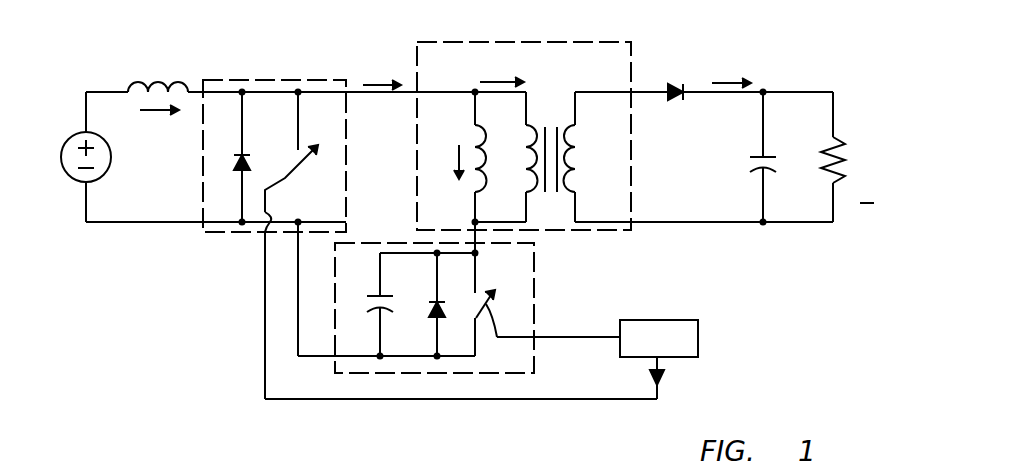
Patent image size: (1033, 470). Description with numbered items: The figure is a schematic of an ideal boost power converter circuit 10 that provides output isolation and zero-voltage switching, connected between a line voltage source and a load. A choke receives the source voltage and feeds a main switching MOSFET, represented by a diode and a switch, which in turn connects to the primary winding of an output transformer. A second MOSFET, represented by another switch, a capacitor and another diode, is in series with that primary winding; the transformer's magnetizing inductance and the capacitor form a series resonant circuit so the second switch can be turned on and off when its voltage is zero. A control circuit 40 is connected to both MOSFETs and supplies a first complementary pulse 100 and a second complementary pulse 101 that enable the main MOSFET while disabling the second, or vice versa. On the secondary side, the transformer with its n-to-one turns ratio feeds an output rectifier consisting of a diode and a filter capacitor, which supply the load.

The boost power converter circuit 10 is at (384, 31).
The control circuit 40 is at (674, 351).
The complementary pulse v100 100 is at (660, 393).
The complementary pulse v101 101 is at (558, 315).